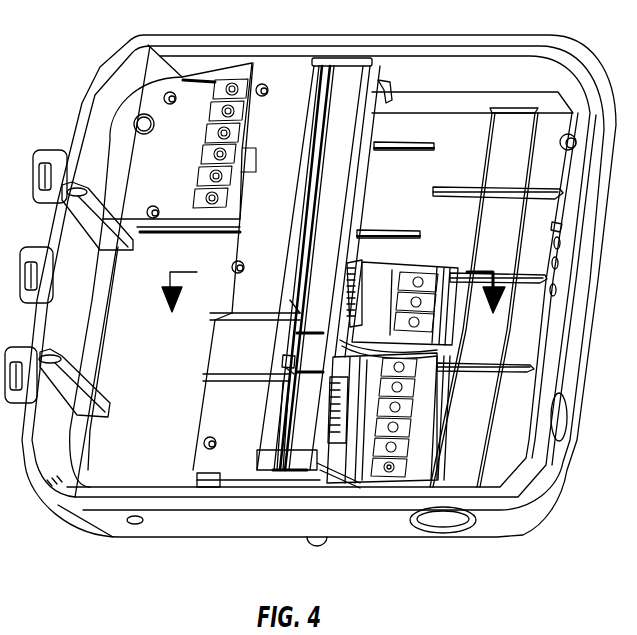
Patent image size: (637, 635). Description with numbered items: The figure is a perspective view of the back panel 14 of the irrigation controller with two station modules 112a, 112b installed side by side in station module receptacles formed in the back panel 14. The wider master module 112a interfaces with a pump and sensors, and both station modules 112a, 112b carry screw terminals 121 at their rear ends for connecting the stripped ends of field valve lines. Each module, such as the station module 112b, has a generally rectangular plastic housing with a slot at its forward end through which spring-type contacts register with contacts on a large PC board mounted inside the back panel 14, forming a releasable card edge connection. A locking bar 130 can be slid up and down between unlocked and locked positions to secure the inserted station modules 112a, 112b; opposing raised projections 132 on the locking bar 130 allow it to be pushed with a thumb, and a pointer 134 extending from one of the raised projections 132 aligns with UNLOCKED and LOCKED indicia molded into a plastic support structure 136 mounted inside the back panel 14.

The back panel 14 is at (525, 535).
The master module 112a is at (367, 470).
The station module 112b is at (403, 264).
The screw terminals 121 is at (394, 463).
The locking bar 130 is at (288, 457).
The raised projections 132 is at (315, 330).
The pointer 134 is at (283, 365).
The plastic support structure 136 is at (220, 340).